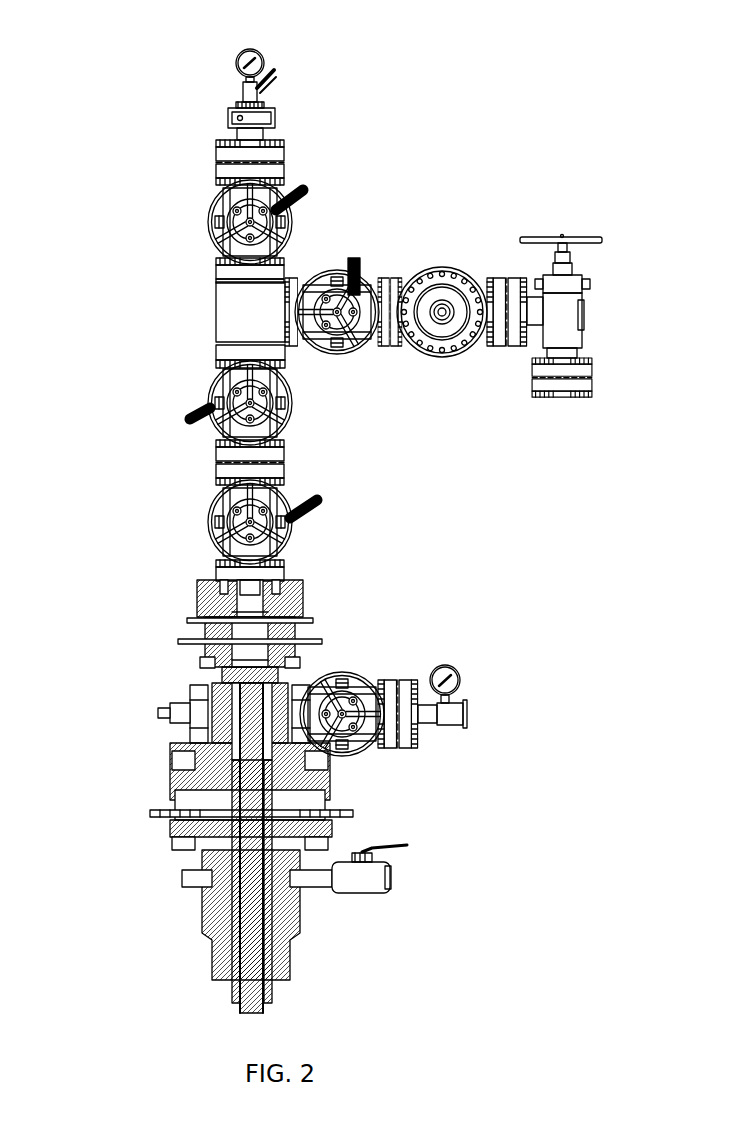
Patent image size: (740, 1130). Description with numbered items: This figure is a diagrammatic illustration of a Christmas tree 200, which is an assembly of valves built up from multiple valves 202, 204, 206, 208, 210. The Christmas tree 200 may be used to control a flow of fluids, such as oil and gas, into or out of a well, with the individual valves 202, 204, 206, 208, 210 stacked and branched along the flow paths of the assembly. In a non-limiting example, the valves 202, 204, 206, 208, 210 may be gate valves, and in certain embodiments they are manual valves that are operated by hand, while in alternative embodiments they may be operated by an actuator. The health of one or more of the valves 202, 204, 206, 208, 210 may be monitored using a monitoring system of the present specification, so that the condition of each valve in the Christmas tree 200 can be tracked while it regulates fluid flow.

The Christmas tree 200 is at (86, 48).
The valve 202 is at (208, 209).
The valve 204 is at (362, 270).
The valve 206 is at (208, 391).
The valve 208 is at (208, 519).
The valve 210 is at (362, 674).